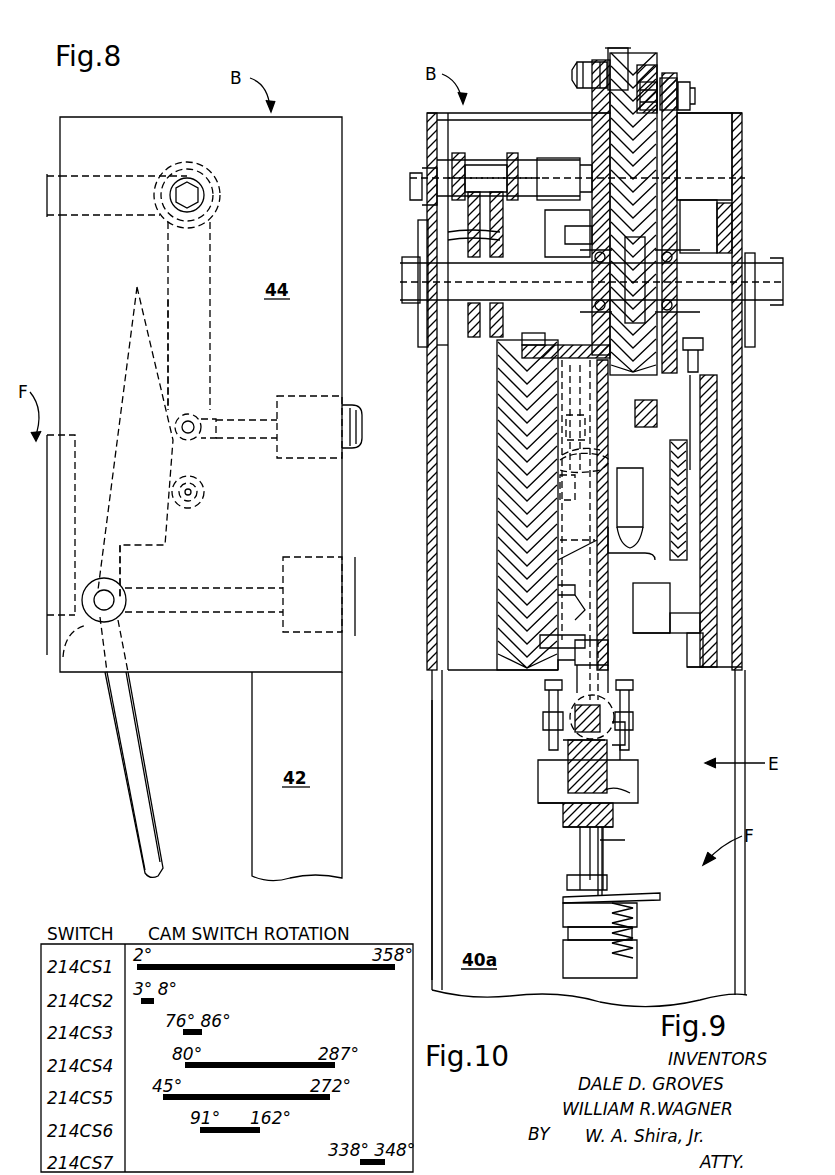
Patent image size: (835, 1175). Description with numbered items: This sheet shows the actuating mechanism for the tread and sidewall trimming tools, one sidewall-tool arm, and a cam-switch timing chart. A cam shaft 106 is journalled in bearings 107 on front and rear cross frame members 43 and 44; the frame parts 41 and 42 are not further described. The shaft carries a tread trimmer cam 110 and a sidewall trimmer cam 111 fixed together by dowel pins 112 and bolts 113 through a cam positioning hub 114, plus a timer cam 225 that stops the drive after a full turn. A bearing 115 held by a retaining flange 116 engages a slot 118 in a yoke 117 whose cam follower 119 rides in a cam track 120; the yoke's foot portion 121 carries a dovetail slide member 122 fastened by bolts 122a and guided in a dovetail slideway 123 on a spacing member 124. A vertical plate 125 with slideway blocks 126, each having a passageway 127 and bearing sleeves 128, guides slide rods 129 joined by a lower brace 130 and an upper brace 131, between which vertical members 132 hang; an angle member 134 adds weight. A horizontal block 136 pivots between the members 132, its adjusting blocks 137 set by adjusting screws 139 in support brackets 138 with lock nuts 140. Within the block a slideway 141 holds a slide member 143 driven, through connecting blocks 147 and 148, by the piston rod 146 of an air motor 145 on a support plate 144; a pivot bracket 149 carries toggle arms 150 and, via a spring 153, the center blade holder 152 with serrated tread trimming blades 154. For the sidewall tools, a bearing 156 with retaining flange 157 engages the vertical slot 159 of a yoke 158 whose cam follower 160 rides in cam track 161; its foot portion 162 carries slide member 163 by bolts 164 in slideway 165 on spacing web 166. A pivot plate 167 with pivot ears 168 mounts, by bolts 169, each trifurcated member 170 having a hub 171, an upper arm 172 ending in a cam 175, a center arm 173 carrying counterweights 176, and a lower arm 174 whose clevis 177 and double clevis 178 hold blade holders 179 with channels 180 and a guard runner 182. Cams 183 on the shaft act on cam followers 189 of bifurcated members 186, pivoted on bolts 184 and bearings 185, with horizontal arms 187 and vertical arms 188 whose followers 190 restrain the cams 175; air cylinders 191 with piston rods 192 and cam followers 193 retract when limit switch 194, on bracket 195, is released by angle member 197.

In FIG. 9, the column 41 is at (748, 942).
In FIG. 9, the slide plate 42 is at (442, 864).
In FIG. 9, the front cross frame member 43 is at (742, 545).
In FIG. 9, the rear cross frame member 44 is at (430, 490).
In FIG. 9, the cam shaft 106 is at (402, 268).
In FIG. 9, the bearings 107 is at (418, 310).
In FIG. 9, the tread trimmer cam 110 is at (636, 52).
In FIG. 9, the sidewall trimmer cam 111 is at (648, 65).
In FIG. 9, the dowel pins 112 is at (628, 260).
In FIG. 9, the bolts 113 is at (660, 312).
In FIG. 9, the cam positioning hub 114 is at (645, 272).
In FIG. 9, the bearing 115 is at (560, 250).
In FIG. 9, the retaining flange 116 is at (585, 262).
In FIG. 9, the yoke 117 is at (592, 100).
In FIG. 9, the slot 118 is at (598, 135).
In FIG. 9, the cam follower 119 is at (598, 45).
In FIG. 9, the cam track 120 is at (617, 48).
In FIG. 9, the foot portion 121 is at (522, 355).
In FIG. 9, the dovetail slide member 122 is at (498, 385).
In FIG. 9, the bolts 122a is at (525, 340).
In FIG. 9, the dovetail slideway 123 is at (535, 672).
In FIG. 9, the spacing member 124 is at (448, 536).
In FIG. 9, the vertical plate 125 is at (597, 555).
In FIG. 9, the slideway block 126 is at (580, 575).
In FIG. 9, the vertical circular passageway 127 is at (600, 455).
In FIG. 9, the bearing sleeve 128 is at (628, 425).
In FIG. 9, the slide rod 129 is at (608, 672).
In FIG. 9, the horizontal brace 130 is at (575, 655).
In FIG. 9, the short horizontal brace 131 is at (562, 400).
In FIG. 9, the vertical member 132 is at (608, 685).
In FIG. 9, the angle member 134 is at (540, 642).
In FIG. 9, the horizontal block 136 is at (613, 808).
In FIG. 9, the adjusting block 137 is at (563, 820).
In FIG. 9, the adjusting screw support bracket 138 is at (630, 740).
In FIG. 9, the adjusting screws 139 is at (633, 700).
In FIG. 9, the lock nuts 140 is at (565, 740).
In FIG. 9, the slideway 141 is at (638, 775).
In FIG. 9, the slide member 143 is at (570, 770).
In FIG. 9, the support plate 144 is at (563, 758).
In FIG. 9, the reciprocating air motor 145 is at (545, 708).
In FIG. 9, the piston rod 146 is at (543, 730).
In FIG. 9, the first connecting block 147 is at (625, 760).
In FIG. 9, the second connecting block 148 is at (633, 722).
In FIG. 9, the pivot bracket 149 is at (620, 792).
In FIG. 9, the toggle arms 150 is at (538, 805).
In FIG. 9, the center trimming blade holder 152 is at (603, 850).
In FIG. 9, the spring 153 is at (580, 835).
In FIG. 9, the serrated tread trimming blades 154 is at (590, 860).
In FIG. 9, the bearing 156 is at (684, 230).
In FIG. 9, the retaining flange 157 is at (717, 235).
In FIG. 9, the yoke 158 is at (670, 80).
In FIG. 9, the vertical slot 159 is at (672, 140).
In FIG. 9, the cam follower 160 is at (690, 96).
In FIG. 9, the cam track 161 is at (655, 84).
In FIG. 9, the foot portion 162 is at (700, 355).
In FIG. 9, the dovetail slide member 163 is at (718, 385).
In FIG. 9, the bolts 164 is at (700, 340).
In FIG. 9, the dovetail slideway 165 is at (700, 670).
In FIG. 9, the spacing web 166 is at (720, 662).
In FIG. 8, the pivot plate 167 is at (60, 430).
In FIG. 9, the pivot plate 167 is at (700, 623).
In FIG. 8, the pivot ears 168 is at (75, 637).
In FIG. 9, the pivot ears 168 is at (670, 600).
In FIG. 8, the bolts 169 is at (120, 608).
In FIG. 9, the bolts 169 is at (575, 616).
In FIG. 8, the trifurcated member 170 is at (98, 722).
In FIG. 8, the central mounting hub 171 is at (66, 658).
In FIG. 9, the central mounting hub 171 is at (633, 635).
In FIG. 8, the upper arm 172 is at (122, 568).
In FIG. 9, the upper arm 172 is at (575, 598).
In FIG. 8, the center arm 173 is at (218, 612).
In FIG. 8, the lower arm 174 is at (130, 762).
In FIG. 9, the lower arm 174 is at (580, 882).
In FIG. 8, the cam 175 is at (166, 530).
In FIG. 9, the cam 175 is at (545, 284).
In FIG. 8, the counterweights 176 is at (352, 597).
In FIG. 9, the clevis 177 is at (607, 880).
In FIG. 9, the double clevis 178 is at (635, 930).
In FIG. 9, the trimming blade holders 179 is at (563, 906).
In FIG. 9, the trimming blade receiving channel 180 is at (568, 955).
In FIG. 9, the guard runner 182 is at (660, 897).
In FIG. 9, the cams 183 is at (448, 234).
In FIG. 8, the bolts 184 is at (195, 195).
In FIG. 9, the bolts 184 is at (412, 190).
In FIG. 8, the bearings 185 is at (200, 172).
In FIG. 9, the bearings 185 is at (578, 160).
In FIG. 8, the bifurcated cam follower member 186 is at (225, 246).
In FIG. 9, the bifurcated cam follower member 186 is at (535, 114).
In FIG. 8, the horizontal arm 187 is at (88, 176).
In FIG. 9, the horizontal arm 187 is at (503, 160).
In FIG. 8, the vertical arm 188 is at (212, 340).
In FIG. 9, the vertical arm 188 is at (555, 320).
In FIG. 9, the cam followers 189 is at (478, 135).
In FIG. 8, the rotatable cam follower 190 is at (204, 497).
In FIG. 9, the rotatable cam follower 190 is at (560, 515).
In FIG. 8, the single-acting air cylinders 191 is at (355, 430).
In FIG. 9, the single-acting air cylinders 191 is at (560, 468).
In FIG. 8, the piston rods 192 is at (268, 440).
In FIG. 9, the piston rods 192 is at (570, 428).
In FIG. 8, the cam followers 193 is at (196, 414).
In FIG. 9, the cam followers 193 is at (566, 448).
In FIG. 9, the limit switch 194 is at (640, 516).
In FIG. 9, the bracket 195 is at (640, 485).
In FIG. 9, the angle member 197 is at (655, 560).
In FIG. 9, the timer cam 225 is at (730, 195).